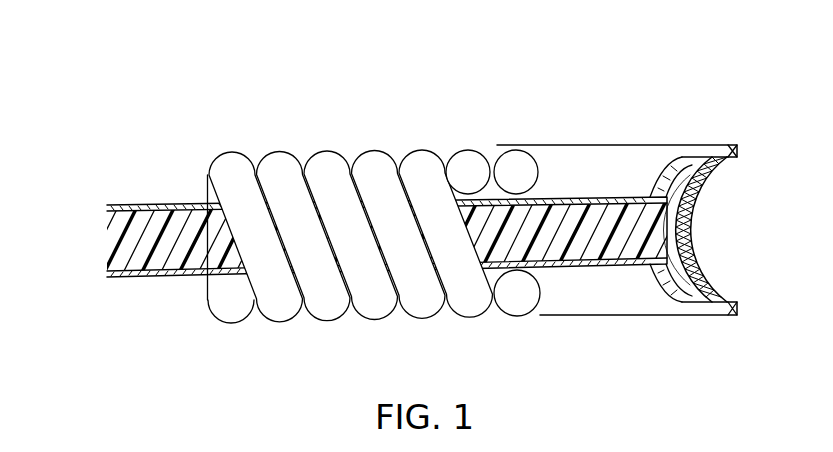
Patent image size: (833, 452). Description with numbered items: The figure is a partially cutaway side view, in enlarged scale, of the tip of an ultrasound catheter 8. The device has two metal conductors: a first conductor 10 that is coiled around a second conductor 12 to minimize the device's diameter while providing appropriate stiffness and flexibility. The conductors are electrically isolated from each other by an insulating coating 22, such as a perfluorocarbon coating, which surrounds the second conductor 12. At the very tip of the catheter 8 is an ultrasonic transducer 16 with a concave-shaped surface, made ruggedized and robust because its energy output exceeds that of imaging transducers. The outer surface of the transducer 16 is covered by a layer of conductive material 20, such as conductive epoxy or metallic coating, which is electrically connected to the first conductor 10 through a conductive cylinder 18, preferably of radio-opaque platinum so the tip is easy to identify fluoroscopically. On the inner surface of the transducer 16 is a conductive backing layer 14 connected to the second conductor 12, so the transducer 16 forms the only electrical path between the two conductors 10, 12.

The ultrasound catheter 8 is at (695, 60).
The first conductor 10 is at (240, 178).
The second conductor 12 is at (180, 256).
The conductive backing layer 14 is at (688, 170).
The ultrasonic transducer 16 is at (692, 212).
The conductive cylinder 18 is at (583, 168).
The conductive layer 20 is at (706, 280).
The insulating coating 22 is at (172, 204).